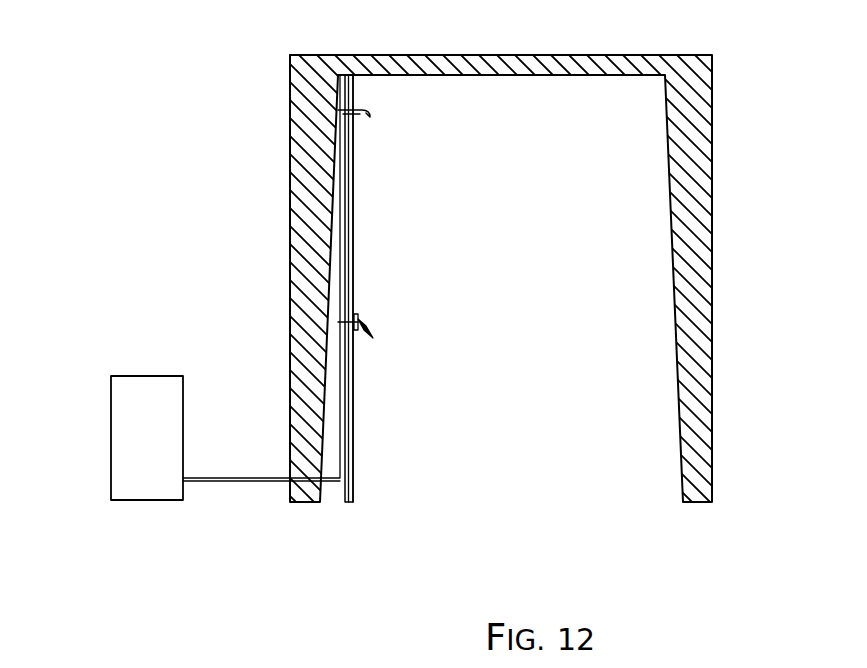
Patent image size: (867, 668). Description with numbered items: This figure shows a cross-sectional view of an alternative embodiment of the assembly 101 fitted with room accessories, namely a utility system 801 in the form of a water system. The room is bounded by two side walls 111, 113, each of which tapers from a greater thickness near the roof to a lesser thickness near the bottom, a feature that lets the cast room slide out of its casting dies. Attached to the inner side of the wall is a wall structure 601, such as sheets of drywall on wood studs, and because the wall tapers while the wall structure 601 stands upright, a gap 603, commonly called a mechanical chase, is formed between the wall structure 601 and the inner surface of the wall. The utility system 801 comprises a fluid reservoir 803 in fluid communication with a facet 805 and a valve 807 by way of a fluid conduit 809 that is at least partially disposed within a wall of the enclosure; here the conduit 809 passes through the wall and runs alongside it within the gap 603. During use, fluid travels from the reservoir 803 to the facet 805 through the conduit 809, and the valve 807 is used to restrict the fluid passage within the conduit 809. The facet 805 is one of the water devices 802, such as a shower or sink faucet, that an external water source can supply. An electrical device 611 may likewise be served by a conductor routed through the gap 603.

The assembly 101 is at (103, 34).
The side wall 111 is at (729, 239).
The side wall 113 is at (239, 271).
The wall structure 601 is at (353, 213).
The electrical device 611 is at (353, 367).
The gap 603 is at (325, 361).
The utility system 801 is at (441, 534).
The water device 802 is at (431, 113).
The fluid reservoir 803 is at (150, 376).
The facet 805 is at (372, 118).
The valve 807 is at (365, 322).
The fluid conduit 809 is at (340, 442).